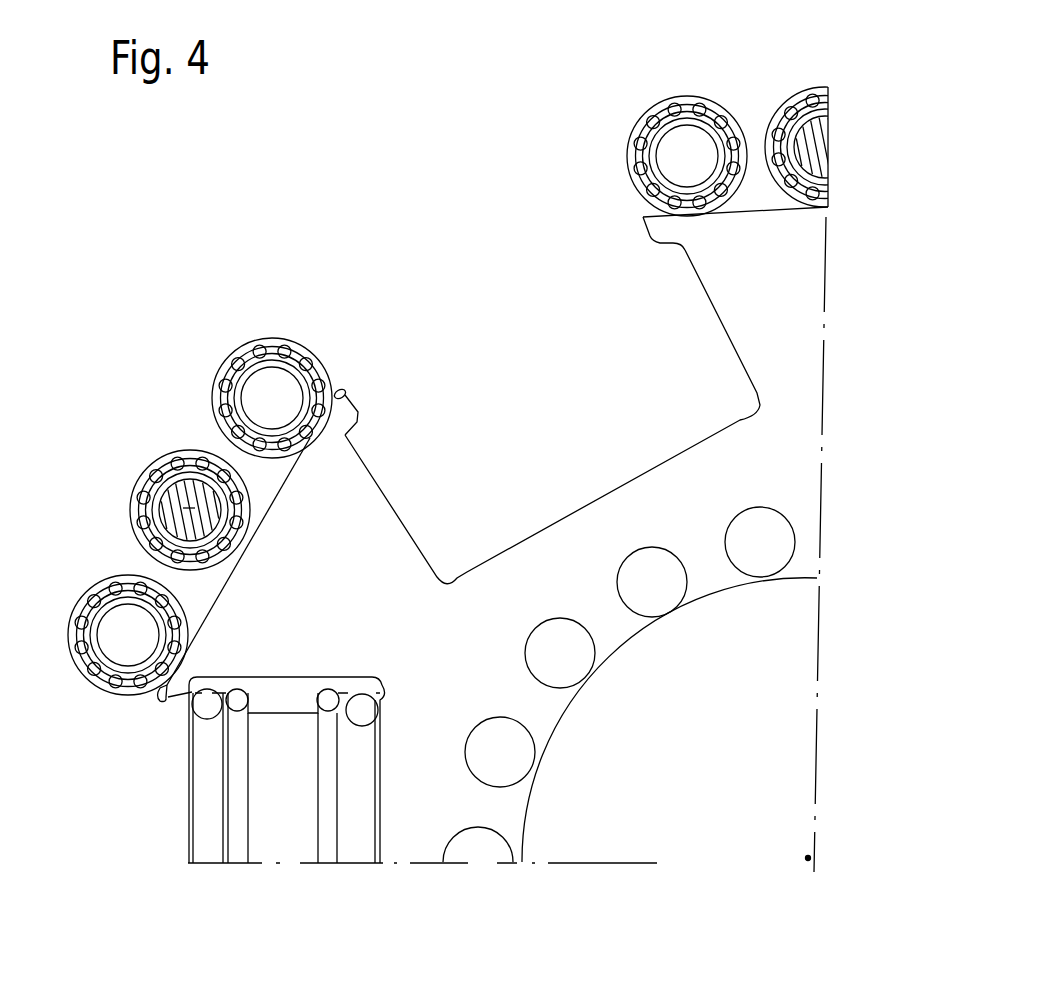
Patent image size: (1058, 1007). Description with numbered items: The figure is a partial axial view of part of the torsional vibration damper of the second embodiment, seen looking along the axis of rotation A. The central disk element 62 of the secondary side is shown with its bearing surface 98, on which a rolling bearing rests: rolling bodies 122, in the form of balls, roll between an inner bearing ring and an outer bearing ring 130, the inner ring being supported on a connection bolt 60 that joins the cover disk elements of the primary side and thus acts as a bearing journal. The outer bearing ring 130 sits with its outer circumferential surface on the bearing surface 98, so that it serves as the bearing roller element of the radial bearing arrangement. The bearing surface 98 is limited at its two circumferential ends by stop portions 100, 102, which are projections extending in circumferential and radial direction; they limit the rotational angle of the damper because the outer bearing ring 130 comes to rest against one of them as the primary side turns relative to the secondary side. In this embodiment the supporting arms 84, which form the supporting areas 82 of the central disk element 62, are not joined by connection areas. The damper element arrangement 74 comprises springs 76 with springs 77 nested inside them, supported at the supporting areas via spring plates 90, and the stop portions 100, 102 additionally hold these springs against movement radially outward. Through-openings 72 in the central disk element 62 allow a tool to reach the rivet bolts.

The connection bolt 60 is at (815, 148).
The central disk element 62 is at (497, 585).
The through-openings 72 is at (573, 658).
The damper element arrangement 74 is at (235, 816).
The spring 76 is at (203, 853).
The spring 77 is at (238, 802).
The supporting area 82 is at (745, 300).
The supporting arm 84 is at (317, 533).
The spring plate 90 is at (305, 695).
The bearing surface 98 is at (253, 510).
The stop portion 100 is at (645, 232).
The stop portion 102 is at (345, 392).
The rolling bodies 122 is at (230, 388).
The outer bearing ring 130 is at (795, 95).
The axis of rotation A is at (807, 862).